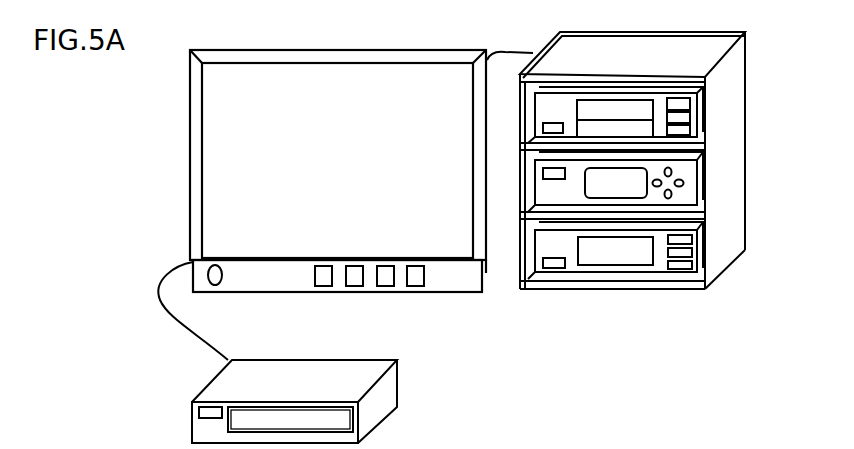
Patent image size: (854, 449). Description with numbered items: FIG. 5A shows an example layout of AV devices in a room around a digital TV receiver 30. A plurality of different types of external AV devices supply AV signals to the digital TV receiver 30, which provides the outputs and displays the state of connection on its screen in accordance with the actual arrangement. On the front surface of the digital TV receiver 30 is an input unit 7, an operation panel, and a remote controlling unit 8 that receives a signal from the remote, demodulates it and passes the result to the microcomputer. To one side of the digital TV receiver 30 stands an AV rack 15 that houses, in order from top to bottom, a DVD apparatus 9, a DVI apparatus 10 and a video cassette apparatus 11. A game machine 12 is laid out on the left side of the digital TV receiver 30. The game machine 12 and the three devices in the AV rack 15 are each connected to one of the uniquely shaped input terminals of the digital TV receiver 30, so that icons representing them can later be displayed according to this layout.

The digital TV receiver 30 is at (413, 50).
The input unit 7 is at (425, 297).
The remote controlling unit 8 is at (215, 286).
The AV rack 15 is at (716, 34).
The DVD apparatus 9 is at (700, 110).
The DVI apparatus 10 is at (702, 180).
The video cassette apparatus 11 is at (700, 248).
The game machine 12 is at (400, 386).